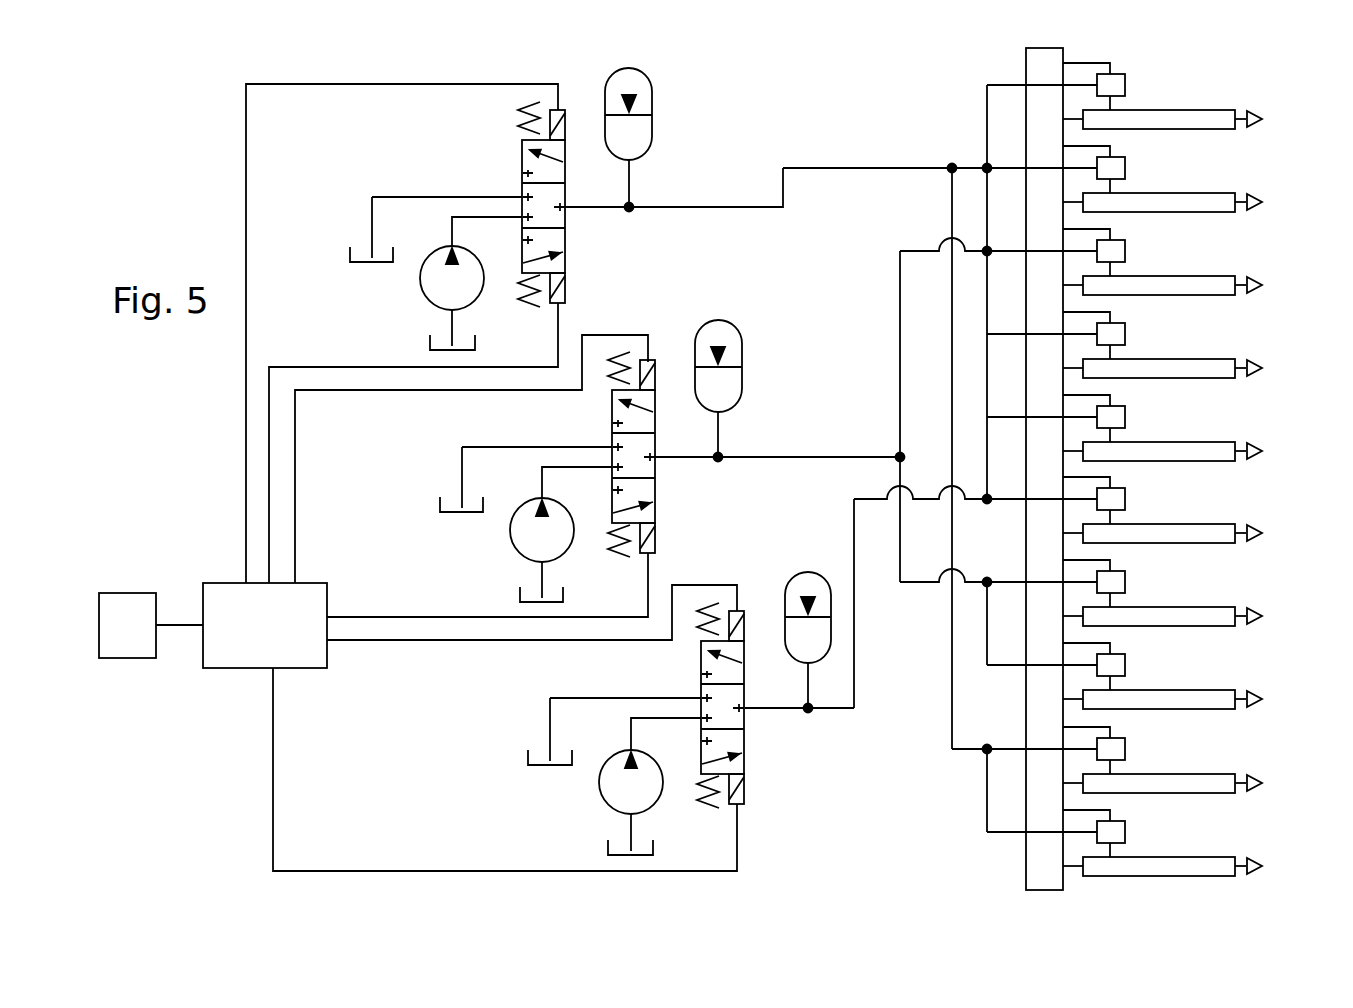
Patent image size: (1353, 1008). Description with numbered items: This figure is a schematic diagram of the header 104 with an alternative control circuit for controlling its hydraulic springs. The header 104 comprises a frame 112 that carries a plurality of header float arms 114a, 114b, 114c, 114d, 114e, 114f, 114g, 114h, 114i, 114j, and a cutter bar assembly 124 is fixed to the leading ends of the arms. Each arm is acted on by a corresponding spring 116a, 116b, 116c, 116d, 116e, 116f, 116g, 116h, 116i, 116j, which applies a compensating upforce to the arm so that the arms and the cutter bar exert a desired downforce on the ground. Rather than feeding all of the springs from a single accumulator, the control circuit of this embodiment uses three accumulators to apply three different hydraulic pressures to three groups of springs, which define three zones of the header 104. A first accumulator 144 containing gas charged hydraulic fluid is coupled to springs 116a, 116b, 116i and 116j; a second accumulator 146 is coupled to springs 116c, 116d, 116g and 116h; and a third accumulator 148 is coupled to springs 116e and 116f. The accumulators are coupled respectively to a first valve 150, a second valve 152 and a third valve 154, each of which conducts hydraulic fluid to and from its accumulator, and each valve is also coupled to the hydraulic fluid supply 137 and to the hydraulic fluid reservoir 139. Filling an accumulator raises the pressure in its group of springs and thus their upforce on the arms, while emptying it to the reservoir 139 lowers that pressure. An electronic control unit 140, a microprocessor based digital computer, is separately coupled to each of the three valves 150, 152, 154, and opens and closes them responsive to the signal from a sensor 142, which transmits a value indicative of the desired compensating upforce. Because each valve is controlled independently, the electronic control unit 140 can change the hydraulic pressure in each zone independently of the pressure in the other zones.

The header 104 is at (1048, 48).
The frame 112 is at (1026, 60).
The header float arm 114a is at (1213, 110).
The header float arm 114b is at (1213, 193).
The header float arm 114c is at (1213, 276).
The header float arm 114d is at (1213, 359).
The header float arm 114e is at (1213, 442).
The header float arm 114f is at (1213, 524).
The header float arm 114g is at (1213, 607).
The header float arm 114h is at (1213, 690).
The header float arm 114i is at (1213, 774).
The header float arm 114j is at (1213, 857).
The spring 116a is at (1125, 85).
The spring 116b is at (1125, 168).
The spring 116c is at (1125, 251).
The spring 116d is at (1125, 334).
The spring 116e is at (1125, 417).
The spring 116f is at (1125, 499).
The spring 116g is at (1125, 582).
The spring 116h is at (1125, 665).
The spring 116i is at (1125, 749).
The spring 116j is at (1125, 832).
The cutter bar assembly 124 is at (1263, 119).
The hydraulic fluid supply 137 is at (424, 294).
The hydraulic fluid reservoir 139 is at (430, 346).
The electronic control unit 140 is at (223, 670).
The sensor 142 is at (122, 658).
The first accumulator 144 is at (652, 95).
The second accumulator 146 is at (737, 330).
The third accumulator 148 is at (808, 570).
The first valve 150 is at (522, 163).
The second valve 152 is at (612, 414).
The third valve 154 is at (701, 665).